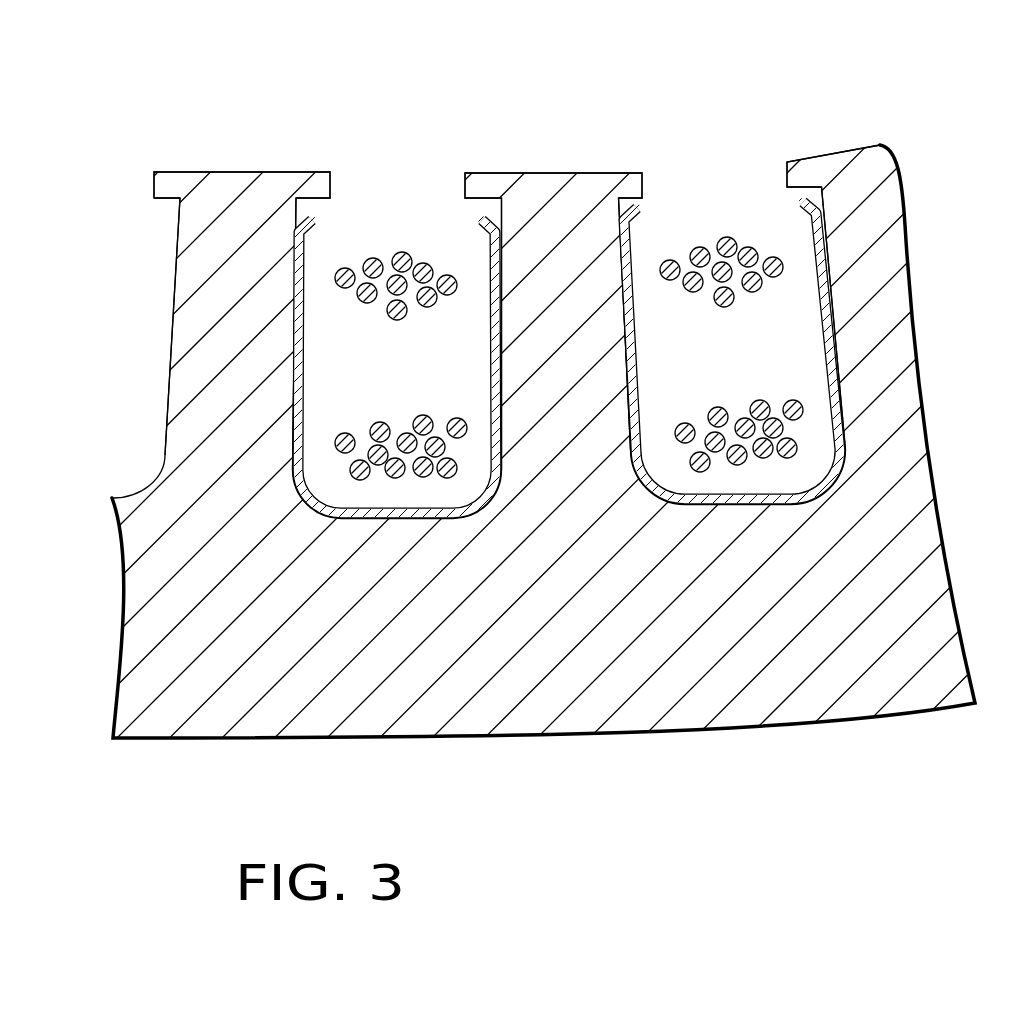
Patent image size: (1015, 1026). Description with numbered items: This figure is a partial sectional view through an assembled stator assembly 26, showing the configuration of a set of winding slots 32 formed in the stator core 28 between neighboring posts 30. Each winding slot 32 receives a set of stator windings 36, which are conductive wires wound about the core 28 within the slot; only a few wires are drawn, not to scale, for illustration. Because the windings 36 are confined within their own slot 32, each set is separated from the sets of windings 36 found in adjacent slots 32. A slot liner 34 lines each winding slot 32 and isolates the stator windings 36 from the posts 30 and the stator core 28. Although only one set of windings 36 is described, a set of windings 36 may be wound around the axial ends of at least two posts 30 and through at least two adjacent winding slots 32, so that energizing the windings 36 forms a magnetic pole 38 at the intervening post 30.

The stator assembly 26 is at (301, 72).
The stator core 28 is at (455, 740).
The posts 30 is at (215, 330).
The winding slots 32 is at (101, 168).
The slot liner 34 is at (504, 355).
The stator windings 36 is at (402, 252).
The magnetic pole 38 is at (569, 93).